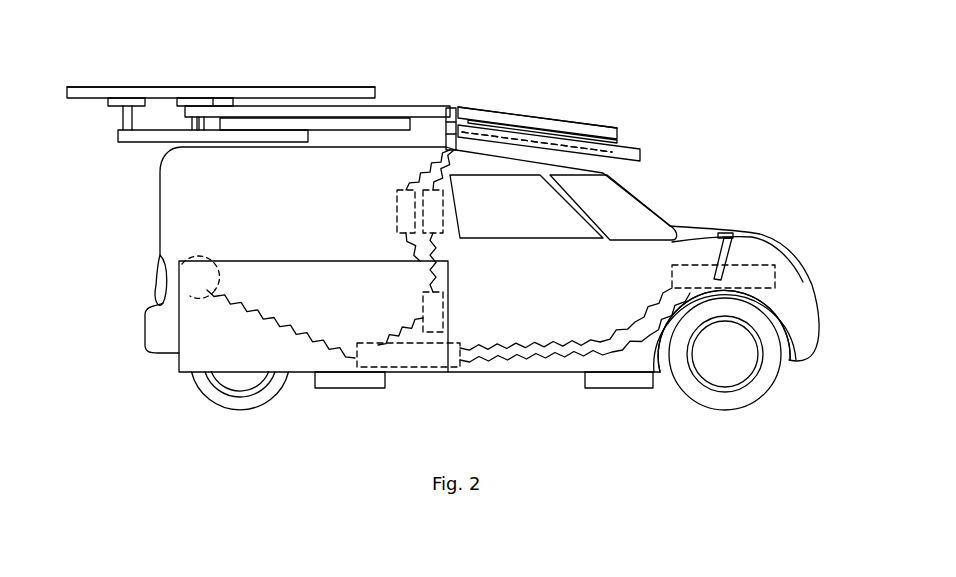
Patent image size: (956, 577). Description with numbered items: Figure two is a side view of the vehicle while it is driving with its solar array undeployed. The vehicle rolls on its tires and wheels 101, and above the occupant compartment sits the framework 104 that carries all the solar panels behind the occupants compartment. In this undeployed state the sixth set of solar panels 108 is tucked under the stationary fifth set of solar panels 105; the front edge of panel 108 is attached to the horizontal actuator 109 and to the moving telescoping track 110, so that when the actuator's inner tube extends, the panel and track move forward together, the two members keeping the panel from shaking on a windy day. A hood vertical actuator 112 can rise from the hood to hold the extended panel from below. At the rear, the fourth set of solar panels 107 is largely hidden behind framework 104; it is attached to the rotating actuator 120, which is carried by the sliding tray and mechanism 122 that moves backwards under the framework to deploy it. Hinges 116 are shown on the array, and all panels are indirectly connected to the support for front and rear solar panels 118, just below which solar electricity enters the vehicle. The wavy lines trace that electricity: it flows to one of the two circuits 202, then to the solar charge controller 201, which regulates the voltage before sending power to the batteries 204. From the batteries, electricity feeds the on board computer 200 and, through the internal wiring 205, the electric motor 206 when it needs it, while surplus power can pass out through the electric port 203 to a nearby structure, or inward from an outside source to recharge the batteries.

The tires and wheels 101 is at (742, 365).
The framework for all solar panels behind the occupants compartment 104 is at (336, 106).
The fifth set of solar panels 105 is at (590, 113).
The fourth set of solar panels 107 is at (130, 87).
The sixth set of solar panels 108 is at (638, 142).
The horizontal actuator associated with sixth set of solar panels 109 is at (517, 136).
The moving telescoping track 110 is at (608, 161).
The hood vertical actuators 112 is at (735, 237).
The hinges 116 is at (249, 98).
The support for front and rear solar panels 118 is at (447, 108).
The rotating actuator 120 is at (108, 103).
The sliding tray and mechanism 122 is at (380, 118).
The on board computer 200 is at (673, 253).
The solar charge controller 201 is at (423, 310).
The circuits 202 is at (397, 210).
The electric port 203 is at (190, 259).
The batteries 204 is at (420, 368).
The internal wiring 205 is at (765, 265).
The electric motor 206 is at (454, 163).